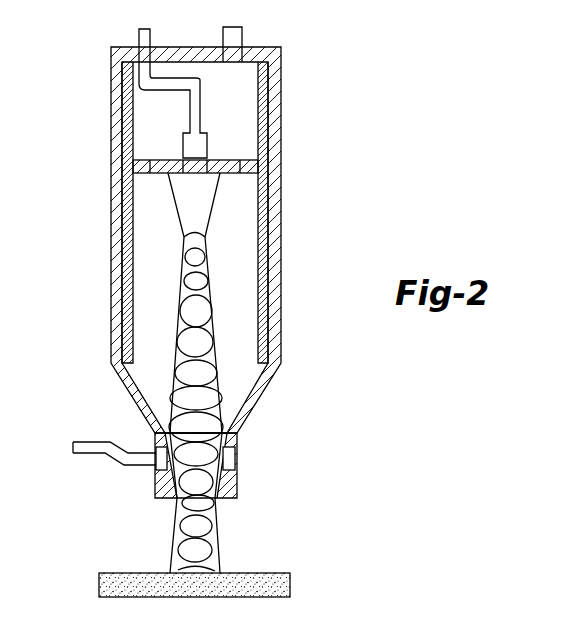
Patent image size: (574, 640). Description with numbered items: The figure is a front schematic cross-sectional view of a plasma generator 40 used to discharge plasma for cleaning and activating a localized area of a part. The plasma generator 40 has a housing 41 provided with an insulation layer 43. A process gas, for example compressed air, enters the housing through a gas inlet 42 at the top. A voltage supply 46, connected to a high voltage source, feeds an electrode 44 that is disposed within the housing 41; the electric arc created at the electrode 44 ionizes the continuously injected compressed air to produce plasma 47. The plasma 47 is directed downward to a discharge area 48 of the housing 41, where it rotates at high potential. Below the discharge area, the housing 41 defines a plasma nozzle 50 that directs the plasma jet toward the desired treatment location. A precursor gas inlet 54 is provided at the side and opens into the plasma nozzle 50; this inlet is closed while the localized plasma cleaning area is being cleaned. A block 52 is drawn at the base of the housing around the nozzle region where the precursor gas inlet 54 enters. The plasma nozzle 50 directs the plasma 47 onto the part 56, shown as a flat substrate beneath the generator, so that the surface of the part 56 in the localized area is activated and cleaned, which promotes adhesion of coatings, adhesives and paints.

The plasma generator 40 is at (348, 47).
The housing 41 is at (281, 268).
The gas inlet 42 is at (244, 31).
The insulation layer 43 is at (263, 192).
The electrode 44 is at (197, 227).
The voltage supply 46 is at (139, 33).
The plasma 47 is at (215, 311).
The discharge area 48 is at (150, 291).
The plasma nozzle 50 is at (248, 437).
The nozzle block 52 is at (238, 487).
The precursor gas inlet 54 is at (72, 446).
The part 56 is at (99, 582).